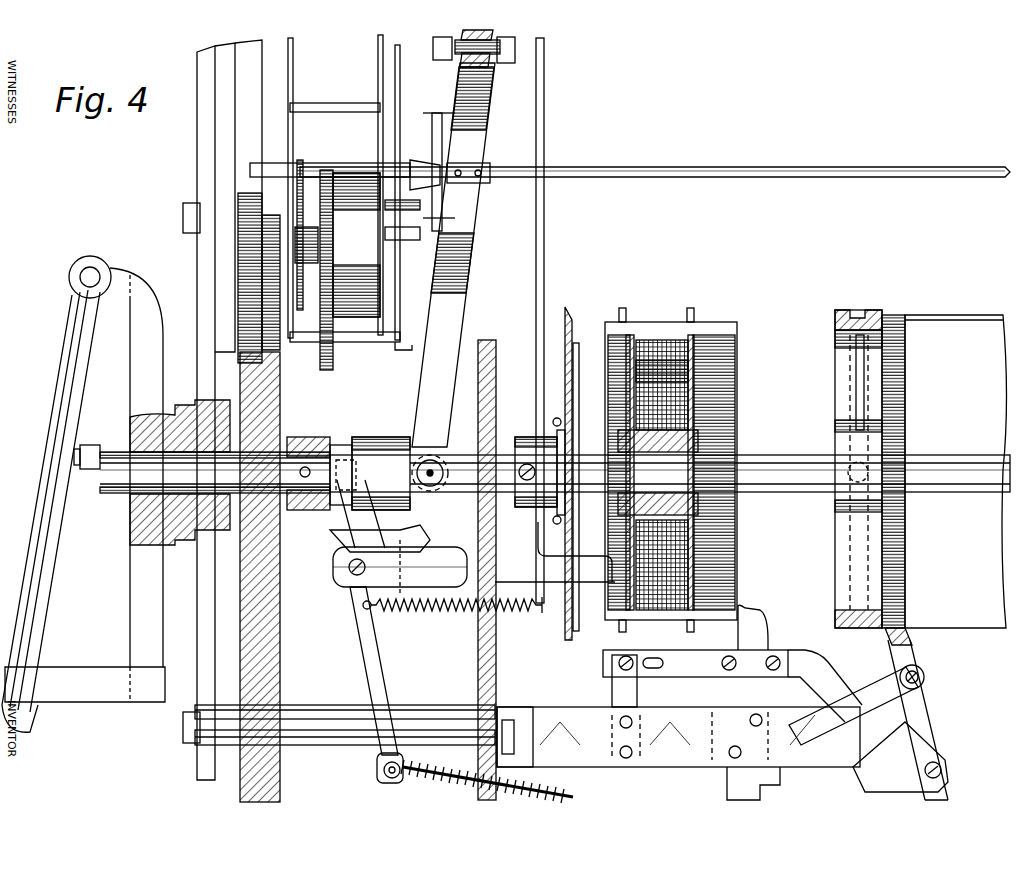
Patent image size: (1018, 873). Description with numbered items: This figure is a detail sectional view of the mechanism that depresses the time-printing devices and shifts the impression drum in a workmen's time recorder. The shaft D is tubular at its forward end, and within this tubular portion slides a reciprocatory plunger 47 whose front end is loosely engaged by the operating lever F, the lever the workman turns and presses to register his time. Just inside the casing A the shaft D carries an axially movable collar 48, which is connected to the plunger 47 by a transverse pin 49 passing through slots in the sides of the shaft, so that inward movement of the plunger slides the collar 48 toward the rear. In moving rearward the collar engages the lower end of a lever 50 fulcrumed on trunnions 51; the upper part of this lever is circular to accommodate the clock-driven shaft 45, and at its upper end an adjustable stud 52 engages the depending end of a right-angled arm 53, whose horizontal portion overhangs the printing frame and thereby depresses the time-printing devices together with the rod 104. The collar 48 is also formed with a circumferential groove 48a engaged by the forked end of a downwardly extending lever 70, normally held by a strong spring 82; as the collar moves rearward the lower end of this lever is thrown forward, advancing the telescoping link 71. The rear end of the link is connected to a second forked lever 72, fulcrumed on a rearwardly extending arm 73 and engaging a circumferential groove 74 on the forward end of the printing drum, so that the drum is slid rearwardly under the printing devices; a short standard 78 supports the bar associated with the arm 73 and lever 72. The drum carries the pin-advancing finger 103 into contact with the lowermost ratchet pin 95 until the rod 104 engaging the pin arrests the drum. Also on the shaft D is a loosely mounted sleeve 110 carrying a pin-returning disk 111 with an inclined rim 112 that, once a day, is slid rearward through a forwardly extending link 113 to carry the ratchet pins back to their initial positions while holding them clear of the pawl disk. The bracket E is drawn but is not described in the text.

The casing A is at (275, 402).
The shaft D is at (125, 505).
The bracket E is at (137, 357).
The operating lever F is at (75, 355).
The clock-driven shaft 45 is at (622, 162).
The plunger 47 is at (116, 452).
The collar 48 is at (376, 437).
The circumferential groove 48a is at (339, 445).
The transverse pin 49 is at (306, 466).
The lever 50 is at (472, 135).
The trunnions 51 is at (470, 252).
The adjustable stud 52 is at (455, 60).
The right-angled arm 53 is at (433, 44).
The lever 70 is at (360, 622).
The link 71 is at (432, 787).
The forked lever 72 is at (932, 735).
The arm 73 is at (922, 690).
The circumferential groove 74 is at (866, 312).
The standard 78 is at (612, 686).
The spring 82 is at (450, 612).
The ratchet pin 95 is at (716, 323).
The pin-advancing finger 103 is at (750, 627).
The rod 104 is at (544, 224).
The sleeve 110 is at (530, 437).
The pin-returning disk 111 is at (568, 318).
The inclined rim 112 is at (582, 340).
The link 113 is at (438, 465).